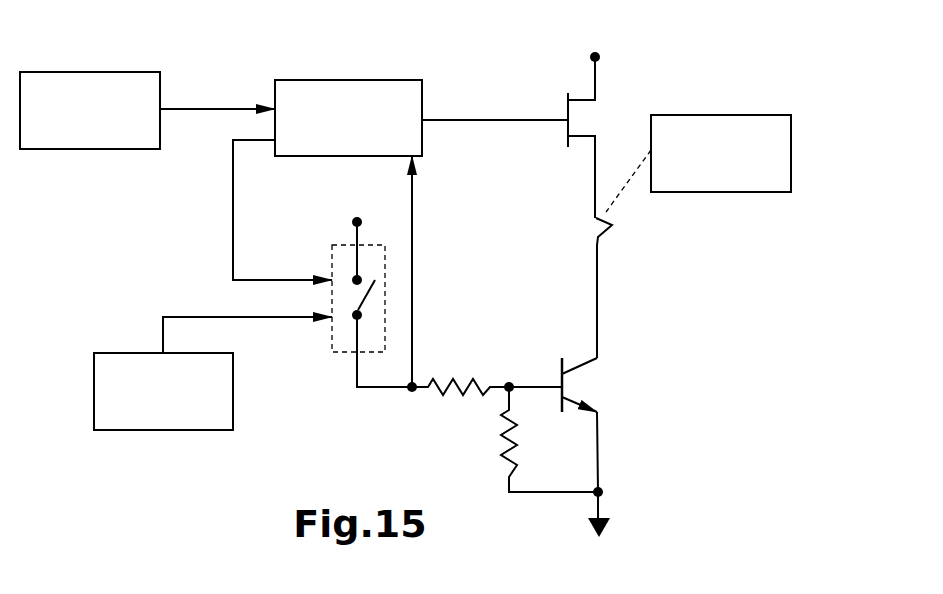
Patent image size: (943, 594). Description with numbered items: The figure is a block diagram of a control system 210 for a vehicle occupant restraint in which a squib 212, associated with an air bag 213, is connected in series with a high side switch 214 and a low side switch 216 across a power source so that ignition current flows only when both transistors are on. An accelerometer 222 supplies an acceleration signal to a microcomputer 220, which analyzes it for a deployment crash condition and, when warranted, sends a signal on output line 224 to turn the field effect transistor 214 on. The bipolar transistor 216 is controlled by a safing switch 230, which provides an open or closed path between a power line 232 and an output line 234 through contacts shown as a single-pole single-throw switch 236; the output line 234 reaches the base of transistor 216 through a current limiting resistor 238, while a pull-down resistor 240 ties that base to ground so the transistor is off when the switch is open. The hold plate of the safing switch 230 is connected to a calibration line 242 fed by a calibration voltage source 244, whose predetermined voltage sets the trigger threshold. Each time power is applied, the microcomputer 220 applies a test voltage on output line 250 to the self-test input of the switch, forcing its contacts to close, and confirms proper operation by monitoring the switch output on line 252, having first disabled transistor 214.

The control system 210 is at (95, 328).
The squib 212 is at (613, 232).
The air bag 213 is at (722, 115).
The high side switch 214 is at (595, 118).
The low side switch 216 is at (582, 383).
The microcomputer 220 is at (346, 80).
The accelerometer 222 is at (82, 72).
The output line 224 is at (484, 120).
The safing switch 230 is at (330, 343).
The power line 232 is at (355, 227).
The output line 234 is at (382, 388).
The switch contacts 236 is at (367, 298).
The current limiting resistor 238 is at (447, 380).
The pull-down resistor 240 is at (502, 455).
The calibration line 242 is at (220, 317).
The calibration voltage source 244 is at (152, 430).
The output line 250 is at (233, 172).
The line 252 is at (412, 243).